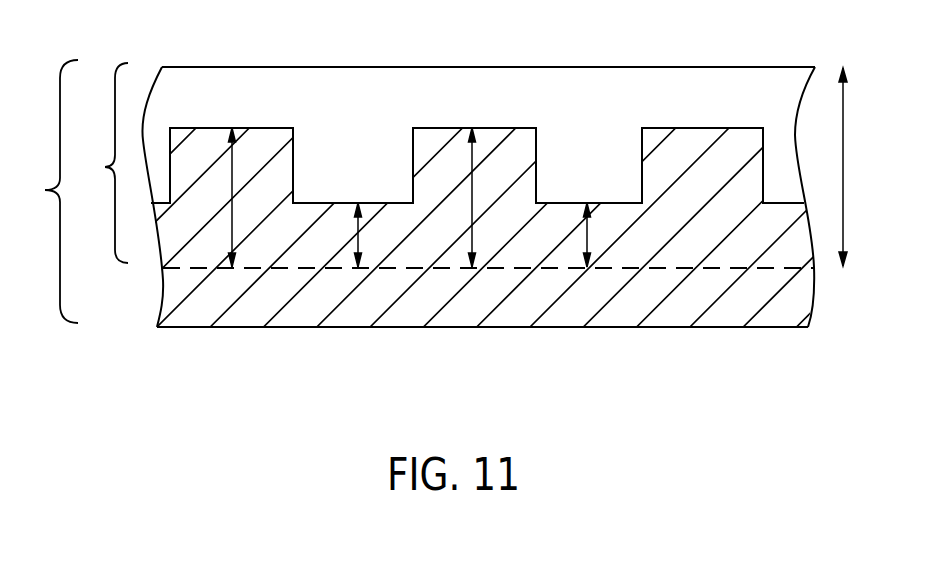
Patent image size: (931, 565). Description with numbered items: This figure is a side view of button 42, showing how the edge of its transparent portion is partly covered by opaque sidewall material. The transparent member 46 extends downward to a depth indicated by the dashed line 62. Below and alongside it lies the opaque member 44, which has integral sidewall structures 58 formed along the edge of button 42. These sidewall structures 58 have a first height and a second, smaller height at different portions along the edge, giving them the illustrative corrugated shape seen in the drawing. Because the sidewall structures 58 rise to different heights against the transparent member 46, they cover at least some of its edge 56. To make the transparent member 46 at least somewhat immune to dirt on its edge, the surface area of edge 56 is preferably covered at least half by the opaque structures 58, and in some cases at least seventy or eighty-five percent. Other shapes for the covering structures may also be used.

The button 42 is at (465, 198).
The opaque member 44 is at (365, 311).
The transparent member 46 is at (363, 77).
The edge 56 is at (438, 163).
The sidewall structure 58 is at (280, 165).
The dashed line 62 is at (787, 268).